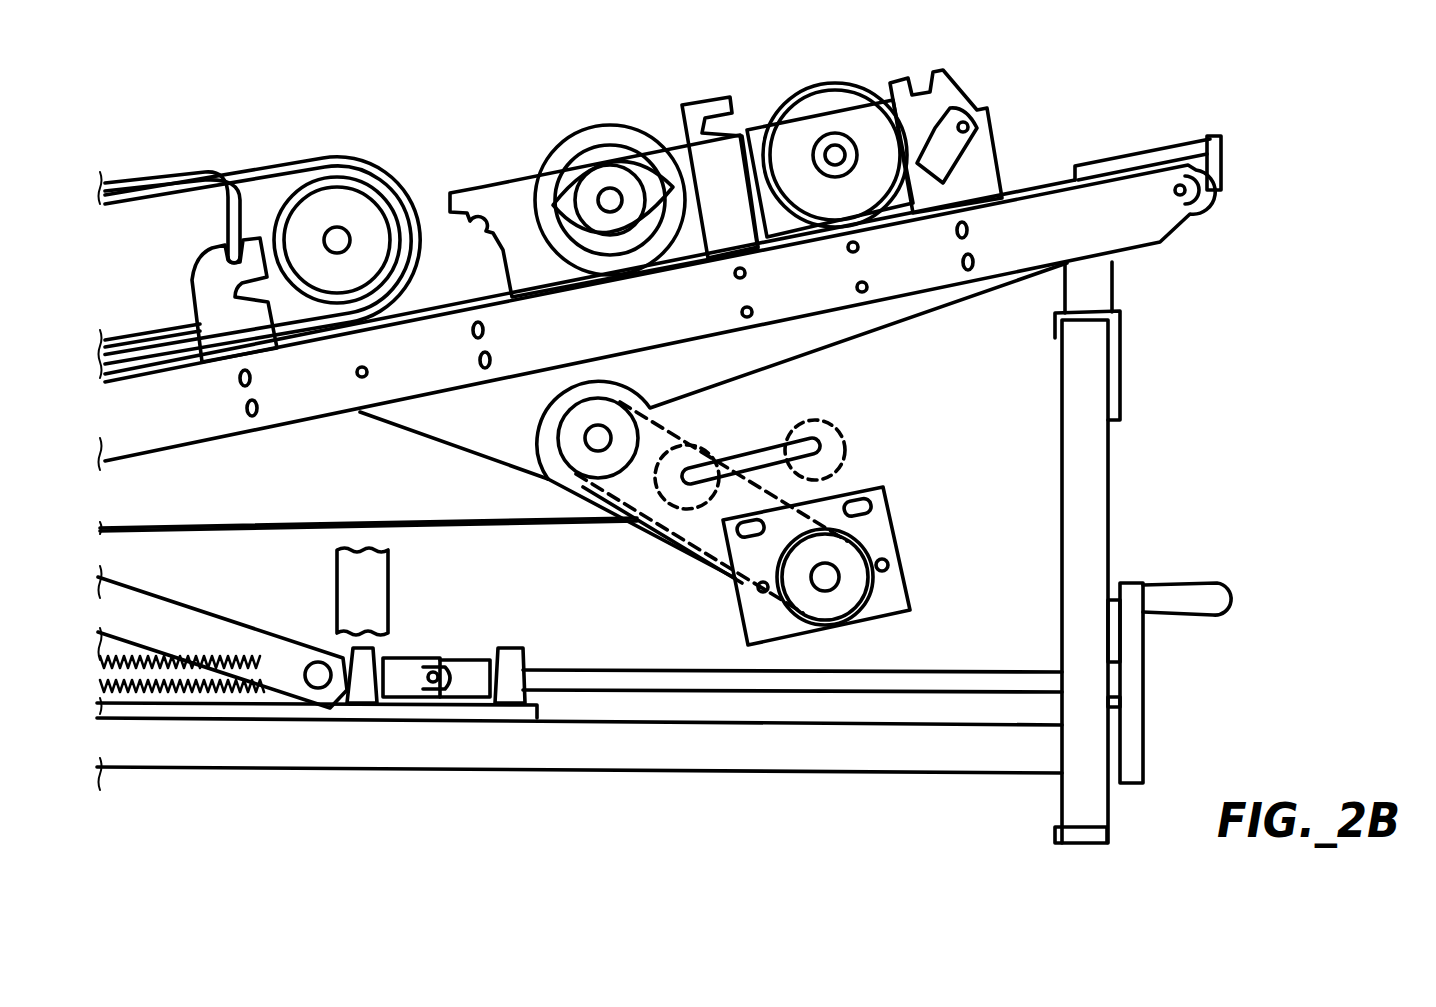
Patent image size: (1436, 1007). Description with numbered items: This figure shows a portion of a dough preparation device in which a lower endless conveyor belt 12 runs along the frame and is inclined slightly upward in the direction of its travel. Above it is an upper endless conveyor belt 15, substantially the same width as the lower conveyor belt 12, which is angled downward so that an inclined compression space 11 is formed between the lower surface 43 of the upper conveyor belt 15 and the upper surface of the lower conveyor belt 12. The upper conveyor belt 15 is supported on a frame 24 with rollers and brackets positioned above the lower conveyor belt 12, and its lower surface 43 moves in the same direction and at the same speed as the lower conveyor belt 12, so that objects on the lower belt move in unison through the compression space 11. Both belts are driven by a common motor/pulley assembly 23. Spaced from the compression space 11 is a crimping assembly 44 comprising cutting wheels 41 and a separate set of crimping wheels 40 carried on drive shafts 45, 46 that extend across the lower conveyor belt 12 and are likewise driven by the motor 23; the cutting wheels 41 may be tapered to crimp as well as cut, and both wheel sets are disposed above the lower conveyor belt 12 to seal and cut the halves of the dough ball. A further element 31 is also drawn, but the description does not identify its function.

The compression space 11 is at (127, 353).
The lower endless conveyor belt 12 is at (152, 368).
The upper endless conveyor belt 15 is at (372, 160).
The motor/pulley assembly 23 is at (783, 614).
The frame 24 is at (253, 233).
The crank handle 31 is at (1133, 728).
The crimping wheels 40 is at (580, 127).
The cutting wheels 41 is at (813, 78).
The lower surface 43 is at (188, 343).
The crimping assembly 44 is at (753, 127).
The drive shaft 45 is at (610, 197).
The drive shaft 46 is at (835, 153).